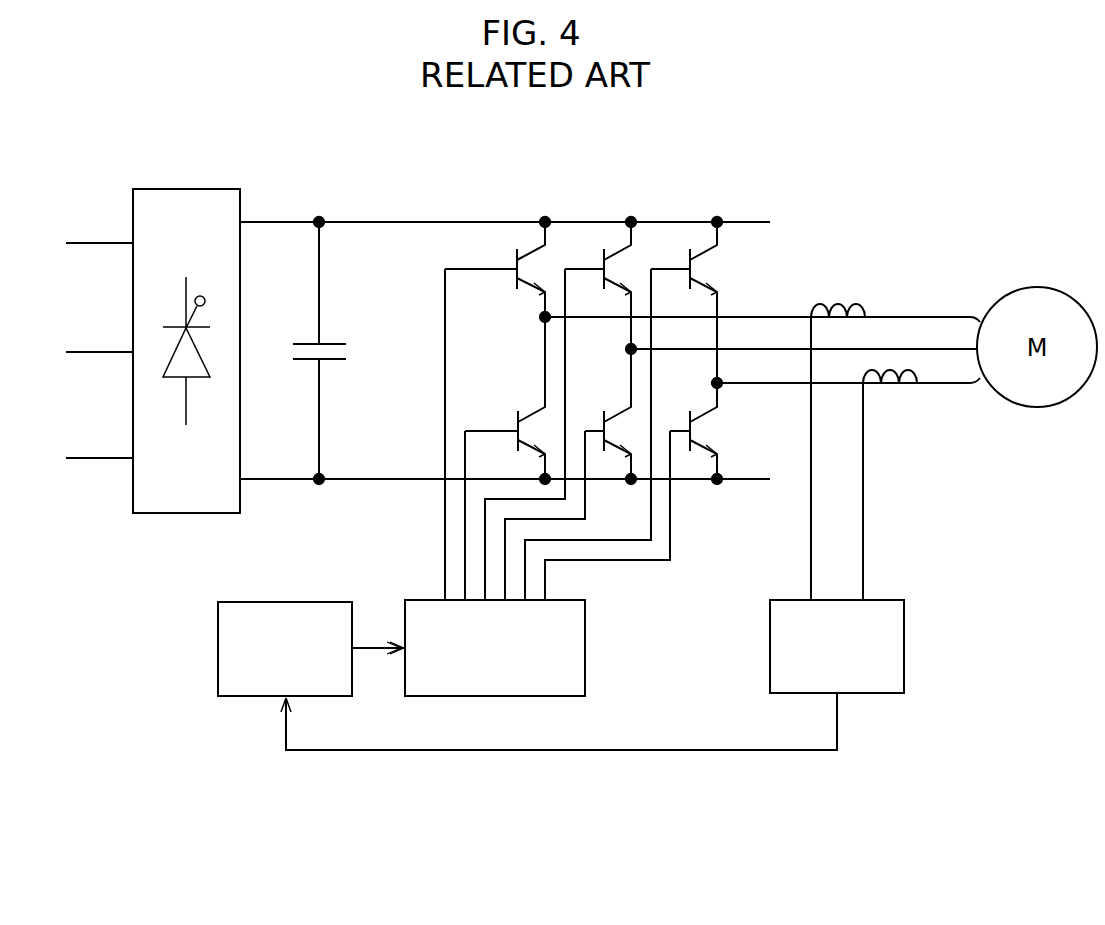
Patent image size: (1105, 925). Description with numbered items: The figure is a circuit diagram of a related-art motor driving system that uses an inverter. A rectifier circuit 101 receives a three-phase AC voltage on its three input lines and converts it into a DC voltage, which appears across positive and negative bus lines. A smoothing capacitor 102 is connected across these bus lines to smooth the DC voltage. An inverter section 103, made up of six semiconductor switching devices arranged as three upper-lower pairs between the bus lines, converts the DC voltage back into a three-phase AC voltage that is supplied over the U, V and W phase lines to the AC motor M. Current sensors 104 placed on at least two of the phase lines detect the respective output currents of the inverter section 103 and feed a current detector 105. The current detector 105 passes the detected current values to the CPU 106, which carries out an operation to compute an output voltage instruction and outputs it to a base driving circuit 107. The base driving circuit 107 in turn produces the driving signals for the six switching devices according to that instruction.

The rectifier circuit 101 is at (176, 197).
The smoothing capacitor 102 is at (327, 335).
The inverter section 103 is at (685, 178).
The current sensors 104 is at (893, 366).
The current detector 105 is at (893, 652).
The CPU 106 is at (230, 646).
The base driving circuit 107 is at (577, 642).